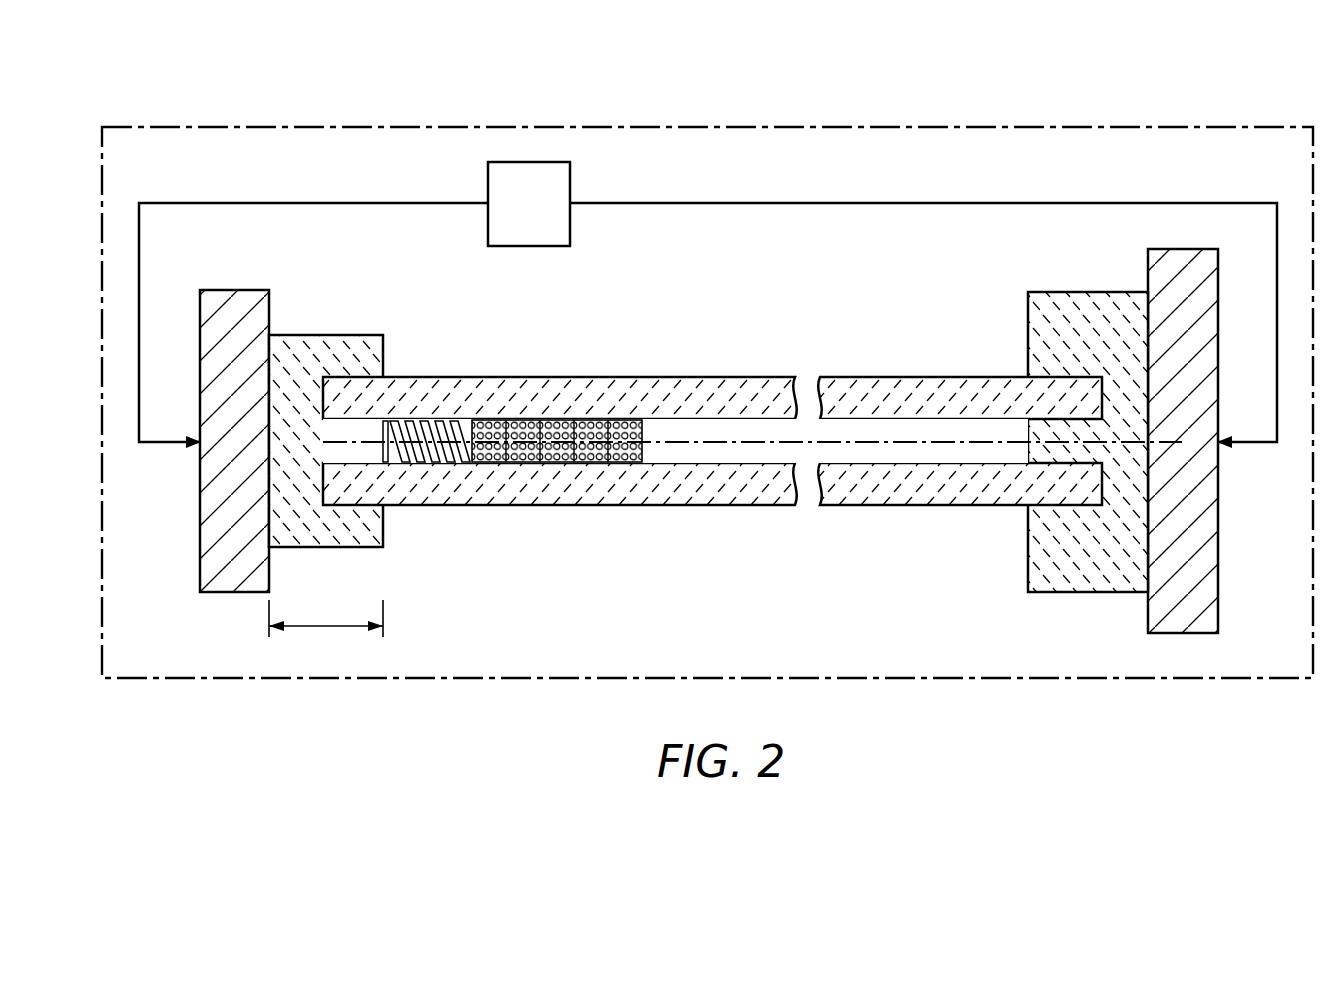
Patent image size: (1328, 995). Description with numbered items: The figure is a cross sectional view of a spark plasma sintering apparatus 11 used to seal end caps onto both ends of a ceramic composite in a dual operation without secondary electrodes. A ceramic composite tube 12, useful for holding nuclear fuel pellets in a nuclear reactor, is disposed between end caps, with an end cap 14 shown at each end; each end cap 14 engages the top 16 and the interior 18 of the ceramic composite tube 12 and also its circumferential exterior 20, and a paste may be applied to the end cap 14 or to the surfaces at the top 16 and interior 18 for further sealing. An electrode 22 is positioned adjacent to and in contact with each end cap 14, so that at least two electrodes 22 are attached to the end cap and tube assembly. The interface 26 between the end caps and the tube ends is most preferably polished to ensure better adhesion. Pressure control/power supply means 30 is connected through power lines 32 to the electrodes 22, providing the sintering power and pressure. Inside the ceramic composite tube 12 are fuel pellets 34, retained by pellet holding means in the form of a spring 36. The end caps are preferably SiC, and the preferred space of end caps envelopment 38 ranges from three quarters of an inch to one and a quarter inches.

The spark plasma sintering apparatus 11 is at (1080, 103).
The ceramic composite tube 12 is at (725, 386).
The end cap 14 is at (288, 340).
The top 16 is at (322, 400).
The interior 18 is at (345, 440).
The circumferential exterior 20 is at (473, 388).
The electrode 22 is at (200, 556).
The interface 26 is at (1056, 462).
The pressure control/power supply means 30 is at (498, 182).
The power lines 32 is at (265, 203).
The fuel pellets 34 is at (640, 439).
The spring 36 is at (424, 463).
The space of end caps envelopment 38 is at (328, 627).